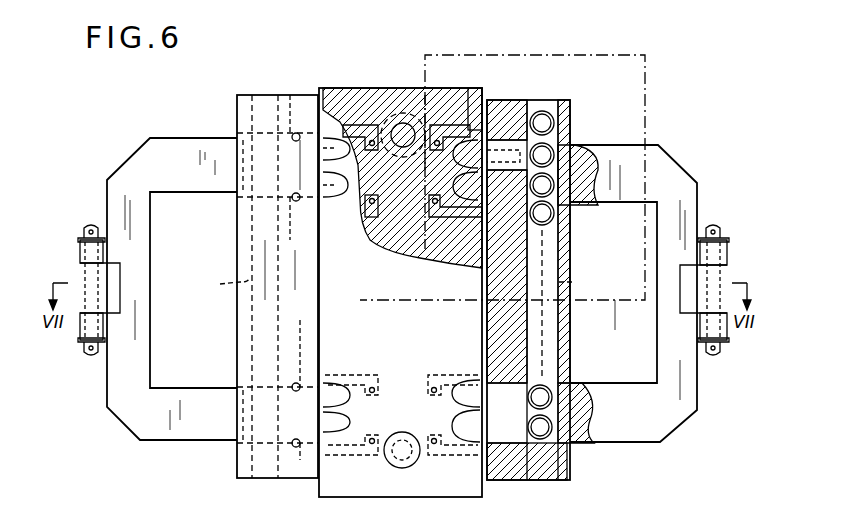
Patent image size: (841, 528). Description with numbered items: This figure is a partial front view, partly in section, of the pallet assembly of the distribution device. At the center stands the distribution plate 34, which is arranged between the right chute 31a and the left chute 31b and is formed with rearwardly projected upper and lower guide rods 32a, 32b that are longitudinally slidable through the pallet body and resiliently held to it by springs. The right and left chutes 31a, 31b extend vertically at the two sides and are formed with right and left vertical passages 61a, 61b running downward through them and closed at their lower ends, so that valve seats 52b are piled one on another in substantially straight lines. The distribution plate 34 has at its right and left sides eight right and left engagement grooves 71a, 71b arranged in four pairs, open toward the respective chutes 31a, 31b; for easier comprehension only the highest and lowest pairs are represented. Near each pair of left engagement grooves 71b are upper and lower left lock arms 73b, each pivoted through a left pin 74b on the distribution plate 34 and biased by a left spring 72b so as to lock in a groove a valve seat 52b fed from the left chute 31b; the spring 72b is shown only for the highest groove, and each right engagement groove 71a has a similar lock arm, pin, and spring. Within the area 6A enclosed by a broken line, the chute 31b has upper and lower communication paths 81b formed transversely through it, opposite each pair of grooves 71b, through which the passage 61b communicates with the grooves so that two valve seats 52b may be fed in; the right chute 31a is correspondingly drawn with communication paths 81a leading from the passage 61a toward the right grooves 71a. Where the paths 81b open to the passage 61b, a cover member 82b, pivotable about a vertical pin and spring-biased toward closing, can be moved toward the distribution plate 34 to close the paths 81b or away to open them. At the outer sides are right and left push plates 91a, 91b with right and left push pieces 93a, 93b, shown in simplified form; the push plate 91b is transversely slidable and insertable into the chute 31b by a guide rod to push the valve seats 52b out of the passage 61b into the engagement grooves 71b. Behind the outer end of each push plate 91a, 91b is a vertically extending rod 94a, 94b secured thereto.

The area enclosed by broken line 6A is at (498, 182).
The right chute 31a is at (237, 104).
The left chute 31b is at (570, 104).
The upper guide rod 32a is at (395, 122).
The lower guide rod 32b is at (405, 455).
The distribution plate 34 is at (482, 492).
The valve seat 52b is at (550, 110).
The right vertical passage 61a is at (213, 284).
The left vertical passage 61b is at (587, 283).
The right engagement grooves 71a is at (328, 140).
The left engagement grooves 71b is at (458, 190).
The left spring 72b is at (495, 100).
The left lock arm 73b is at (478, 88).
The left pin 74b is at (432, 95).
The first guide grooves 81a is at (292, 271).
The communication path 81b is at (505, 120).
The cover member 82b is at (562, 225).
The right push plate 91a is at (112, 170).
The left push plate 91b is at (700, 192).
The right push piece 93a is at (180, 150).
The left push piece 93b is at (625, 150).
The right vertically extending rod 94a is at (85, 280).
The left vertically extending rod 94b is at (720, 290).